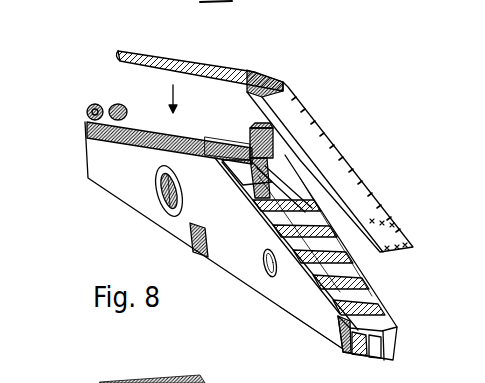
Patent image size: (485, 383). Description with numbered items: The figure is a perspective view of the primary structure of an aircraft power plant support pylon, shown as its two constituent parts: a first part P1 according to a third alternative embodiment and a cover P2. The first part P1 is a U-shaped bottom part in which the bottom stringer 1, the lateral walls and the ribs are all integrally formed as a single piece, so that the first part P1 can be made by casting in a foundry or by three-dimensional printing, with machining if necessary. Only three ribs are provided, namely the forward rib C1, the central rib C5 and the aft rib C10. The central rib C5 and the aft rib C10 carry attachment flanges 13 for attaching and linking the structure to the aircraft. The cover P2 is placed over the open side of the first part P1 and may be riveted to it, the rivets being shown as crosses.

The bottom stringer 1 is at (300, 330).
The attachment flanges 13 is at (92, 104).
The aft rib C10 is at (100, 106).
The central rib C5 is at (222, 172).
The forward rib C1 is at (358, 281).
The first part P1 is at (240, 290).
The cover P2 is at (357, 108).